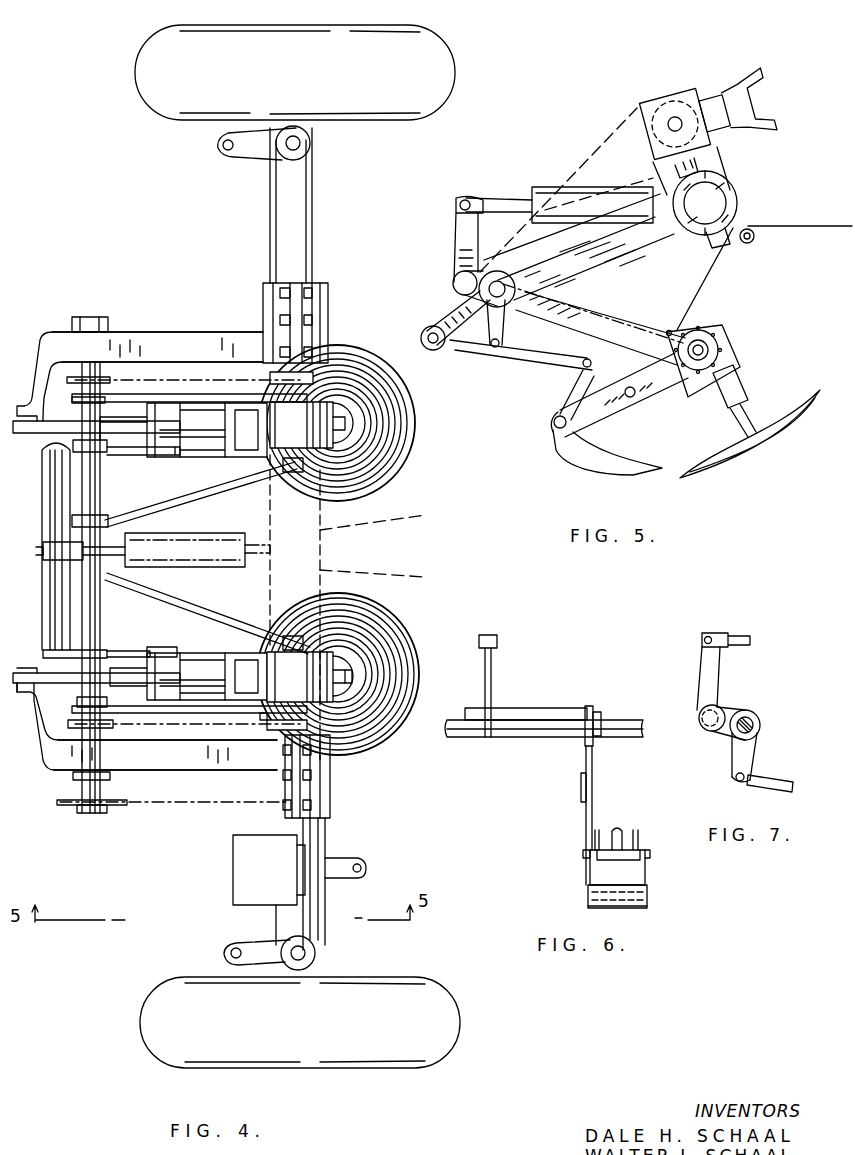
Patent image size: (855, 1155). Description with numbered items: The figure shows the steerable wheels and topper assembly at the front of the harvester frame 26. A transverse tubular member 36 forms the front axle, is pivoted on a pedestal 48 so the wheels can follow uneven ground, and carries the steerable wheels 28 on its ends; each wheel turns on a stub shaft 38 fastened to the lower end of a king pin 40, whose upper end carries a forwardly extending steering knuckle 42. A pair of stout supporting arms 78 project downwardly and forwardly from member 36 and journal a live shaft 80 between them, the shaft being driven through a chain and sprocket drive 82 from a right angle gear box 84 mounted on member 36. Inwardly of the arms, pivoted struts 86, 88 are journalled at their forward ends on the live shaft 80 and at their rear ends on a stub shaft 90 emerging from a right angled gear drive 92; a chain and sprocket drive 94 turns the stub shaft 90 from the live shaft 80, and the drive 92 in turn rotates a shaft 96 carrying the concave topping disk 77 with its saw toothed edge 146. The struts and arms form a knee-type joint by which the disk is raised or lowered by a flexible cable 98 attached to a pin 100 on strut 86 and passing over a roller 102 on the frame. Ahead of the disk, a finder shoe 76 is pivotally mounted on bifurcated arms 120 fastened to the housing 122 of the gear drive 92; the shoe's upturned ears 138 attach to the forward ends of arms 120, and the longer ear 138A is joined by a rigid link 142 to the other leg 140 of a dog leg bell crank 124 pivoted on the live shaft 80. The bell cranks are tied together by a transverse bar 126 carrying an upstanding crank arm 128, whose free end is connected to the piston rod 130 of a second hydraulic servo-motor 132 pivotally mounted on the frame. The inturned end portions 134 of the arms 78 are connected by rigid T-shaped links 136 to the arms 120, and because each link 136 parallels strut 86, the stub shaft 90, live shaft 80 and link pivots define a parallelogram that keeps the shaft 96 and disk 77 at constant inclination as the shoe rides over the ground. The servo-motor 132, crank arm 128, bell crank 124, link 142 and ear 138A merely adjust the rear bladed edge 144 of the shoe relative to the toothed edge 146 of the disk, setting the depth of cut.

In FIG. 4, the frame 26 is at (42, 772).
In FIG. 4, the steerable wheels 28 is at (425, 40).
In FIG. 4, the transverse tubular member 36 is at (320, 272).
In FIG. 5, the transverse tubular member 36 is at (738, 195).
In FIG. 4, the stub shafts 38 is at (312, 130).
In FIG. 4, the king pins 40 is at (296, 150).
In FIG. 4, the steering knuckles 42 is at (258, 155).
In FIG. 4, the pedestal 48 is at (400, 578).
In FIG. 4, the finder shoes 76 is at (180, 412).
In FIG. 5, the finder shoes 76 is at (620, 473).
In FIG. 6, the finder shoes 76 is at (630, 905).
In FIG. 4, the topping disk 77 is at (415, 445).
In FIG. 5, the topping disk 77 is at (750, 470).
In FIG. 4, the supporting arms 78 is at (172, 300).
In FIG. 5, the supporting arms 78 is at (645, 245).
In FIG. 4, the live shaft 80 is at (100, 485).
In FIG. 5, the live shaft 80 is at (500, 285).
In FIG. 6, the live shaft 80 is at (620, 718).
In FIG. 7, the live shaft 80 is at (758, 712).
In FIG. 4, the chain and sprocket drive 82 is at (158, 805).
In FIG. 5, the chain and sprocket drive 82 is at (625, 134).
In FIG. 4, the right angle gear box 84 is at (285, 872).
In FIG. 5, the right angle gear box 84 is at (712, 140).
In FIG. 4, the pivoted strut 86 is at (135, 395).
In FIG. 5, the pivoted strut 86 is at (640, 315).
In FIG. 4, the pivoted strut 88 is at (200, 490).
In FIG. 4, the stub shaft 90 is at (292, 480).
In FIG. 5, the stub shaft 90 is at (705, 345).
In FIG. 4, the right angled gear drive 92 is at (298, 420).
In FIG. 5, the right angled gear drive 92 is at (705, 330).
In FIG. 4, the chain and sprocket drive 94 is at (180, 380).
In FIG. 5, the chain and sprocket drive 94 is at (595, 298).
In FIG. 4, the shaft 96 is at (353, 680).
In FIG. 5, the shaft 96 is at (745, 410).
In FIG. 5, the flexible cable 98 is at (705, 288).
In FIG. 4, the pin 100 is at (262, 725).
In FIG. 5, the pin 100 is at (667, 336).
In FIG. 5, the roller 102 is at (755, 240).
In FIG. 4, the forwardly projecting arms 120 is at (160, 440).
In FIG. 5, the forwardly projecting arms 120 is at (648, 418).
In FIG. 6, the forwardly projecting arms 120 is at (605, 830).
In FIG. 4, the housing 122 is at (333, 442).
In FIG. 5, the housing 122 is at (738, 365).
In FIG. 4, the bell cranks 124 is at (43, 450).
In FIG. 5, the bell cranks 124 is at (453, 288).
In FIG. 6, the bell cranks 124 is at (592, 705).
In FIG. 7, the bell cranks 124 is at (725, 712).
In FIG. 4, the transverse bar 126 is at (50, 505).
In FIG. 6, the transverse bar 126 is at (510, 713).
In FIG. 7, the transverse bar 126 is at (718, 735).
In FIG. 4, the crank arm 128 is at (36, 570).
In FIG. 5, the crank arm 128 is at (456, 244).
In FIG. 6, the crank arm 128 is at (490, 683).
In FIG. 7, the crank arm 128 is at (703, 700).
In FIG. 4, the piston rod 130 is at (110, 548).
In FIG. 5, the piston rod 130 is at (490, 205).
In FIG. 6, the piston rod 130 is at (495, 638).
In FIG. 7, the piston rod 130 is at (745, 650).
In FIG. 4, the second hydraulic servo-motor 132 is at (215, 548).
In FIG. 5, the second hydraulic servo-motor 132 is at (592, 198).
In FIG. 4, the inturned end portions 134 is at (30, 398).
In FIG. 5, the inturned end portions 134 is at (455, 350).
In FIG. 4, the T-shaped links 136 is at (105, 420).
In FIG. 5, the T-shaped links 136 is at (555, 375).
In FIG. 6, the T-shaped links 136 is at (620, 835).
In FIG. 4, the upturned ears 138 is at (125, 665).
In FIG. 5, the upturned ears 138 is at (553, 447).
In FIG. 6, the upturned ears 138 is at (645, 872).
In FIG. 5, the longer upturned ear 138A is at (553, 424).
In FIG. 6, the longer upturned ear 138A is at (590, 870).
In FIG. 5, the other leg 140 is at (485, 355).
In FIG. 6, the other leg 140 is at (595, 764).
In FIG. 7, the other leg 140 is at (755, 755).
In FIG. 4, the rigid link 142 is at (110, 455).
In FIG. 5, the rigid link 142 is at (535, 355).
In FIG. 6, the rigid link 142 is at (580, 790).
In FIG. 7, the rigid link 142 is at (765, 780).
In FIG. 4, the rear bladed edge 144 is at (301, 552).
In FIG. 5, the rear bladed edge 144 is at (670, 465).
In FIG. 6, the rear bladed edge 144 is at (590, 905).
In FIG. 4, the saw toothed edge 146 is at (385, 492).
In FIG. 5, the saw toothed edge 146 is at (680, 480).